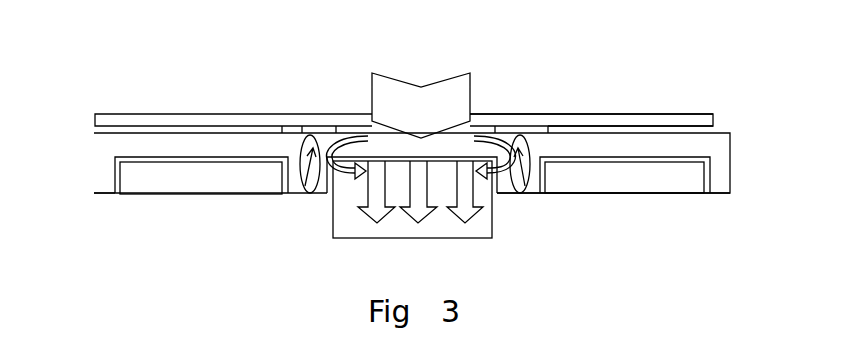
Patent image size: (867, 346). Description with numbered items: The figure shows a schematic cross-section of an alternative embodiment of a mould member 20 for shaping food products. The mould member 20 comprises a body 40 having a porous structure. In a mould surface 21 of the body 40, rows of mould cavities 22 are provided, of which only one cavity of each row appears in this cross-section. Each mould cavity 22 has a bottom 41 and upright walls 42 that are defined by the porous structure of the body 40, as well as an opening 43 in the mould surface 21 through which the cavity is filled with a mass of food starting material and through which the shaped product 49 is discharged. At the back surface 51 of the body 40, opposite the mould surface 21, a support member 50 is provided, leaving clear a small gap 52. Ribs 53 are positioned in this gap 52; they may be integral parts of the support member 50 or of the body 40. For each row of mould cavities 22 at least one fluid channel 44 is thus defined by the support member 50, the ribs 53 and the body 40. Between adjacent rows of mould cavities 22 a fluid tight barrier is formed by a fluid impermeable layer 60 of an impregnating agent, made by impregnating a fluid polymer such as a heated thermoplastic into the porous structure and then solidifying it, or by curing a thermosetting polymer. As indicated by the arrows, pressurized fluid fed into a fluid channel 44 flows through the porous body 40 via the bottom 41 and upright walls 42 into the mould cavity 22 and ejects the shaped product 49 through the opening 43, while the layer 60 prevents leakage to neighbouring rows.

The mould member 20 is at (123, 85).
The mould surface 21 is at (107, 197).
The mould cavity 22 is at (657, 182).
The body 40 is at (97, 163).
The bottom 41 is at (154, 157).
The upright walls 42 is at (290, 158).
The opening 43 is at (613, 200).
The fluid channel 44 is at (482, 127).
The shaped product 49 is at (173, 191).
The support member 50 is at (608, 112).
The back surface 51 is at (700, 126).
The gap 52 is at (658, 128).
The ribs 53 is at (320, 127).
The fluid impermeable layer 60 is at (312, 184).